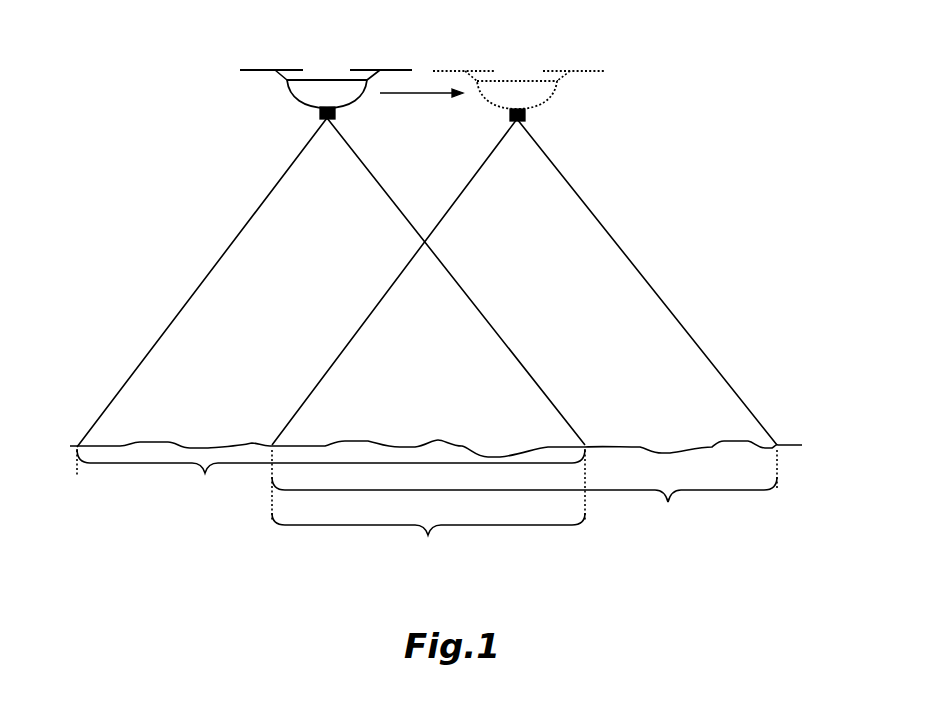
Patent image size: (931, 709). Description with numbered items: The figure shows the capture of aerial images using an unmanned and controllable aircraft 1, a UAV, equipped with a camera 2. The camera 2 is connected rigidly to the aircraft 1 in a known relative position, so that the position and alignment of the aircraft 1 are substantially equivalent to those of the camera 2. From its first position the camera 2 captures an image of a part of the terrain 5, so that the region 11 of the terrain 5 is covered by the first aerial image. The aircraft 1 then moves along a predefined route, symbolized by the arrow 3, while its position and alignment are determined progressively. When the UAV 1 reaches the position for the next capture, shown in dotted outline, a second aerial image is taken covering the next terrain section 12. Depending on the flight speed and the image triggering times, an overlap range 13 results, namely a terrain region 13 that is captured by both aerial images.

The unmanned and controllable aircraft 1 is at (312, 46).
The camera 2 is at (320, 115).
The arrow 3 is at (427, 94).
The terrain 5 is at (437, 440).
The region of the terrain 11 is at (331, 474).
The next terrain section 12 is at (524, 505).
The overlap range 13 is at (428, 538).